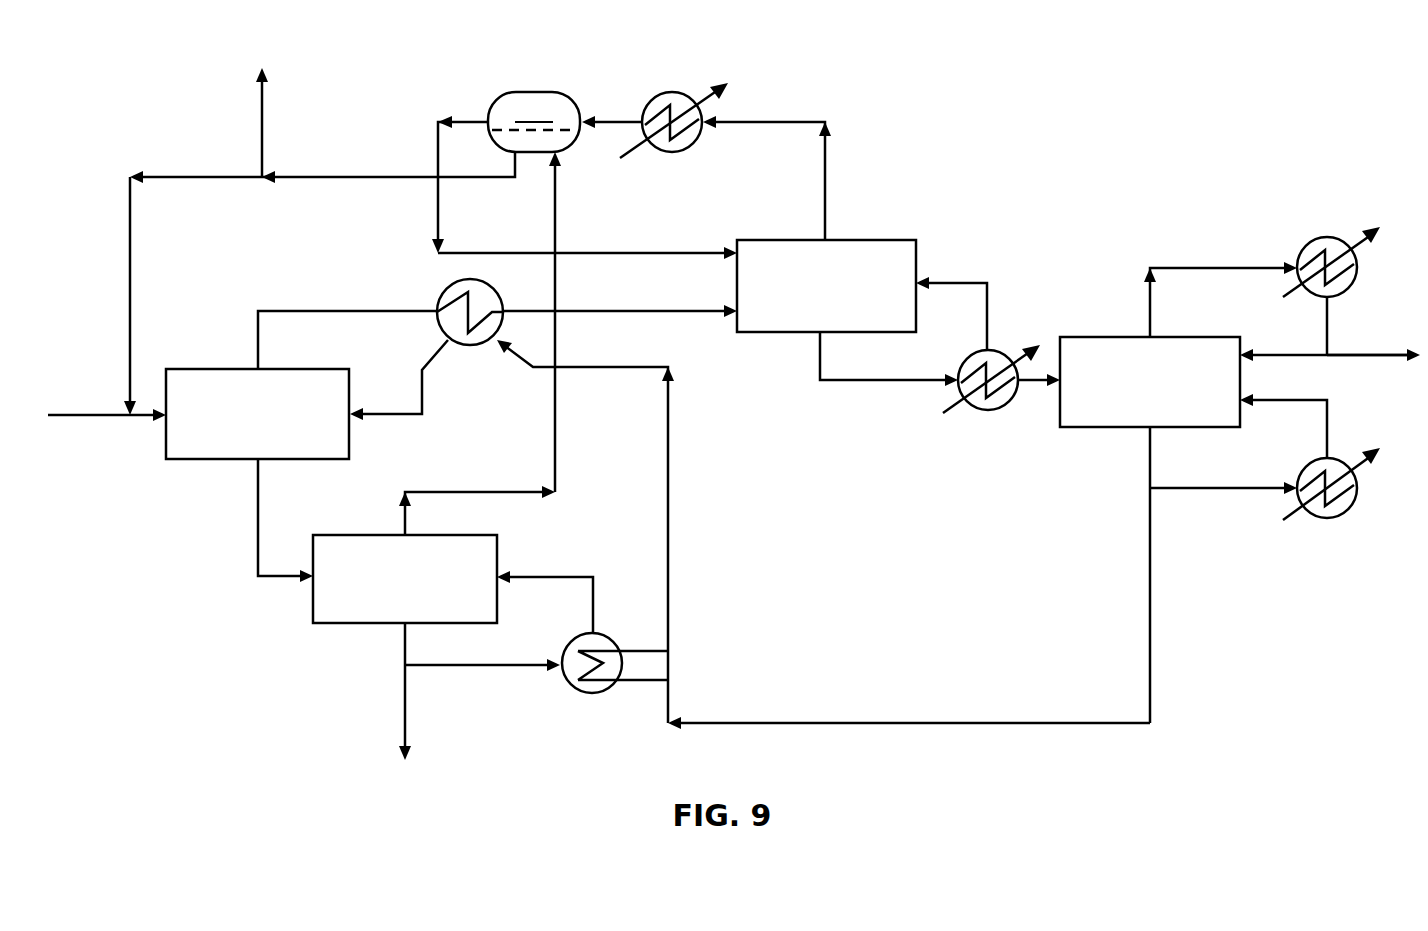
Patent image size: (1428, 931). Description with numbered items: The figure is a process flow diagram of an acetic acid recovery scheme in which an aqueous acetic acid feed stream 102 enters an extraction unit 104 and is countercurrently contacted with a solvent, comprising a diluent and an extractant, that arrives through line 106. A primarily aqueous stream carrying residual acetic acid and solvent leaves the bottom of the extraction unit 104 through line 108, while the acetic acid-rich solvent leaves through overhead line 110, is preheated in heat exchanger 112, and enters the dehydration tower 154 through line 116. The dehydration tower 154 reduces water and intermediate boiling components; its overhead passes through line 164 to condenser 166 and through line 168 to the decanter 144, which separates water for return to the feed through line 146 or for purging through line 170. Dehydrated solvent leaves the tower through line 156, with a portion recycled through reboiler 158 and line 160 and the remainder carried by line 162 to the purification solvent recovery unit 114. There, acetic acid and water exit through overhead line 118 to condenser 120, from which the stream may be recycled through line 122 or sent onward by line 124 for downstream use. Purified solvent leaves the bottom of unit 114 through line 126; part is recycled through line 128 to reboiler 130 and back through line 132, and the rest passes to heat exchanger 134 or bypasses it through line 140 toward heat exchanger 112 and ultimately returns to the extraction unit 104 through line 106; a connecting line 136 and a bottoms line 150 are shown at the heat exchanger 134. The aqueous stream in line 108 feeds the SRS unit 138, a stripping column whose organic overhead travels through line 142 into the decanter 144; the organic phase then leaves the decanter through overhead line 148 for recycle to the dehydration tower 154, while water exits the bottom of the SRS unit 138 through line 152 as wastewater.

The aqueous acetic acid feed stream 102 is at (100, 418).
The extraction unit 104 is at (212, 368).
The solvent line 106 is at (397, 410).
The aqueous stream line 108 is at (255, 518).
The overhead line 110 is at (347, 310).
The heat exchanger 112 is at (469, 348).
The purification solvent recovery unit 114 is at (1108, 337).
The line to dehydration tower 116 is at (637, 308).
The overhead line 118 is at (1185, 265).
The condenser 120 is at (1328, 232).
The recycle line 122 is at (1287, 353).
The product line 124 is at (1355, 353).
The purified solvent line 126 is at (1148, 475).
The reboiler feed line 128 is at (1235, 488).
The reboiler 130 is at (1337, 517).
The reboiler return line 132 is at (1330, 418).
The heat exchanger 134 is at (597, 695).
The heated stream to stripping 136 is at (545, 575).
The SRS unit 138 is at (350, 533).
The bypass line 140 is at (672, 580).
The overhead line 142 is at (483, 490).
The decanter 144 is at (534, 122).
The water return line 146 is at (365, 175).
The overhead line 148 is at (440, 215).
The stripping bottoms stream 150 is at (462, 668).
The water line 152 is at (403, 713).
The dehydration tower 154 is at (783, 238).
The dehydrated solvent line 156 is at (857, 385).
The reboiler 158 is at (988, 412).
The recycle line 160 is at (960, 282).
The line to PSR unit 162 is at (1033, 405).
The overhead line 164 is at (828, 178).
The condenser 166 is at (675, 88).
The condensate line 168 is at (624, 118).
The purge line 170 is at (265, 120).